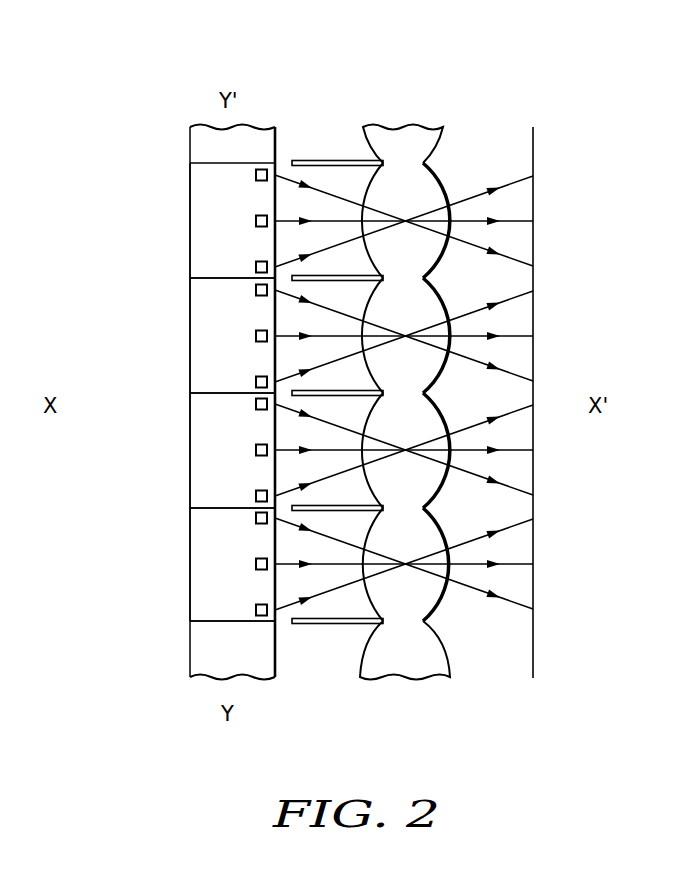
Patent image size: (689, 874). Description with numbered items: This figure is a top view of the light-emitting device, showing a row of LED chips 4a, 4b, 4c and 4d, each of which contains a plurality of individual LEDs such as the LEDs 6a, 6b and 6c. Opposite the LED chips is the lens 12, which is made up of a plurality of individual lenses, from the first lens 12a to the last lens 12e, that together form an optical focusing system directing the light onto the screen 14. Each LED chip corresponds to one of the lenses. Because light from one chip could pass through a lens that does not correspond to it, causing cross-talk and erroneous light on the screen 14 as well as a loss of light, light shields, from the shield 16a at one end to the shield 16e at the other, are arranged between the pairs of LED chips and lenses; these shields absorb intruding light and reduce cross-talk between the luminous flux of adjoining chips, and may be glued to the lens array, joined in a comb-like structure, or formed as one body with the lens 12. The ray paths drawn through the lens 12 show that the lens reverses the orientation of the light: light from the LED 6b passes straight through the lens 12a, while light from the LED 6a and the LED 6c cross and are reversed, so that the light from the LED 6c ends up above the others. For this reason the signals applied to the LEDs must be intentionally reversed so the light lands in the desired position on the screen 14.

The LED chip 4a is at (201, 220).
The LED chip 4b is at (198, 343).
The LED chip 4c is at (198, 448).
The LED chip 4d is at (198, 552).
The LED 6a is at (253, 179).
The LED 6b is at (253, 223).
The LED 6c is at (253, 267).
The lens 12 is at (435, 390).
The lens 12a is at (445, 184).
The lens 12e is at (407, 678).
The screen 14 is at (546, 155).
The shield 16a is at (327, 159).
The shield 16e is at (327, 625).